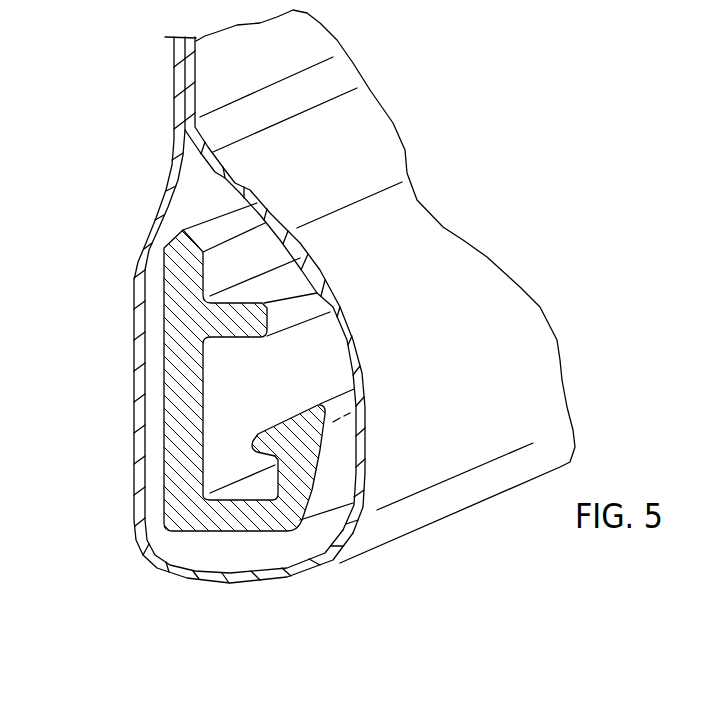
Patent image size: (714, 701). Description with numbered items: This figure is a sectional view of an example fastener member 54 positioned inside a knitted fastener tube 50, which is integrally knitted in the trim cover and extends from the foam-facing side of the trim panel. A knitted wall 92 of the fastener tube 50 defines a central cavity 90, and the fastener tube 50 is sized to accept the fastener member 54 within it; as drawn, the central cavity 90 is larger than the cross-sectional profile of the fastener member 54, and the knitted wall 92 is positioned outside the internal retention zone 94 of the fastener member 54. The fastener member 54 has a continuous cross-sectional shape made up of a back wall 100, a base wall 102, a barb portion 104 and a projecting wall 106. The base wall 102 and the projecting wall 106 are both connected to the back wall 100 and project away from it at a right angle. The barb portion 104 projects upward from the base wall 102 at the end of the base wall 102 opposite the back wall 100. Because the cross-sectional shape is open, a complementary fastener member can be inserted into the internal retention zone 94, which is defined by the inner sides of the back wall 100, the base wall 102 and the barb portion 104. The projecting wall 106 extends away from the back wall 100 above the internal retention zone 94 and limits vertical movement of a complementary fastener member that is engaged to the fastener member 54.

The knitted fastener tube 50 is at (463, 280).
The fastener member 54 is at (155, 336).
The central cavity 90 is at (222, 551).
The knitted wall 92 is at (366, 416).
The internal retention zone 94 is at (225, 445).
The back wall 100 is at (175, 442).
The base wall 102 is at (257, 520).
The barb portion 104 is at (305, 458).
The projecting wall 106 is at (227, 313).